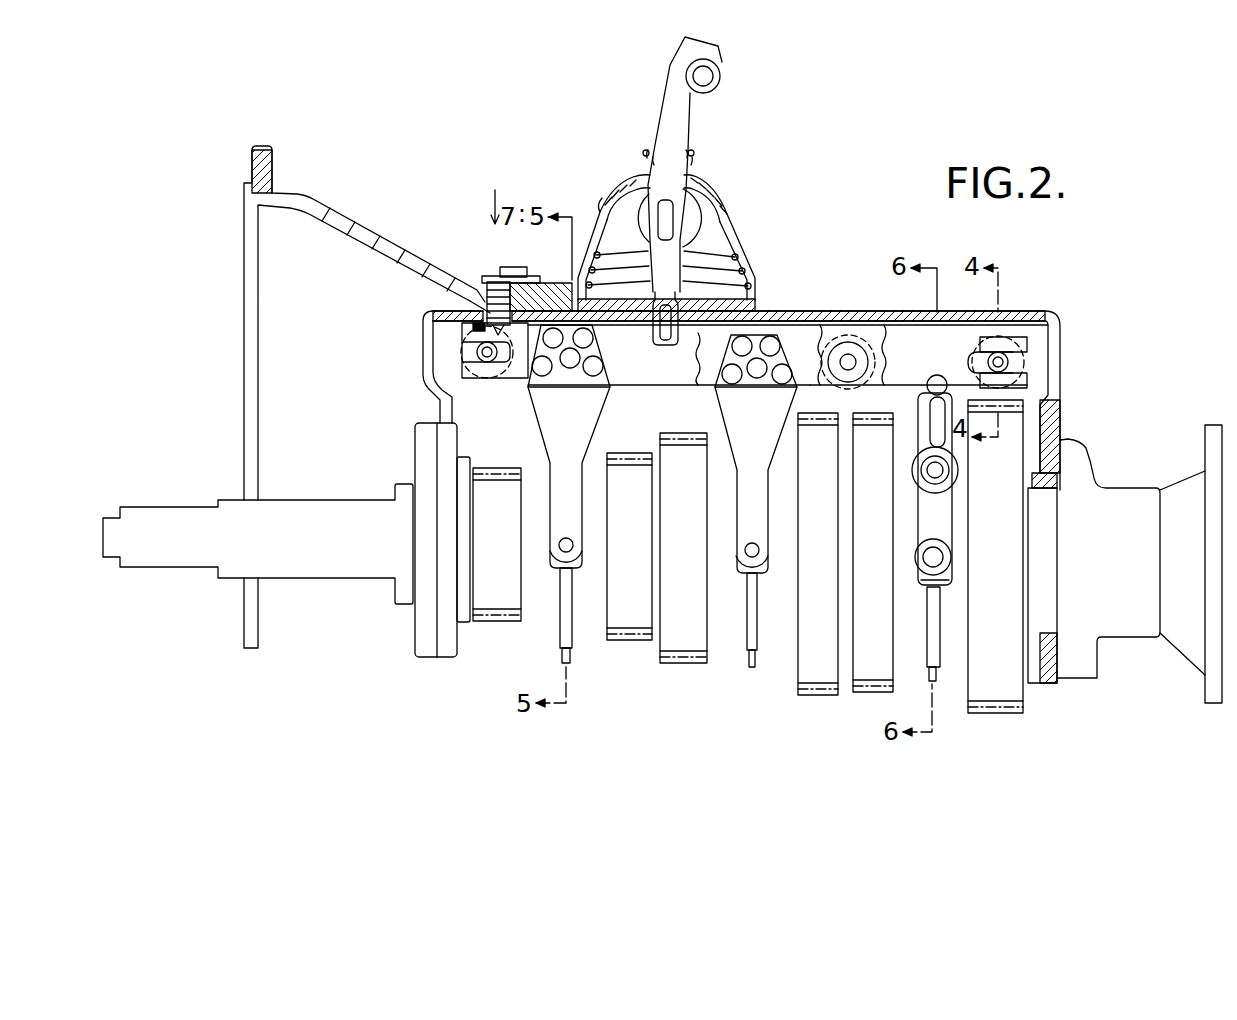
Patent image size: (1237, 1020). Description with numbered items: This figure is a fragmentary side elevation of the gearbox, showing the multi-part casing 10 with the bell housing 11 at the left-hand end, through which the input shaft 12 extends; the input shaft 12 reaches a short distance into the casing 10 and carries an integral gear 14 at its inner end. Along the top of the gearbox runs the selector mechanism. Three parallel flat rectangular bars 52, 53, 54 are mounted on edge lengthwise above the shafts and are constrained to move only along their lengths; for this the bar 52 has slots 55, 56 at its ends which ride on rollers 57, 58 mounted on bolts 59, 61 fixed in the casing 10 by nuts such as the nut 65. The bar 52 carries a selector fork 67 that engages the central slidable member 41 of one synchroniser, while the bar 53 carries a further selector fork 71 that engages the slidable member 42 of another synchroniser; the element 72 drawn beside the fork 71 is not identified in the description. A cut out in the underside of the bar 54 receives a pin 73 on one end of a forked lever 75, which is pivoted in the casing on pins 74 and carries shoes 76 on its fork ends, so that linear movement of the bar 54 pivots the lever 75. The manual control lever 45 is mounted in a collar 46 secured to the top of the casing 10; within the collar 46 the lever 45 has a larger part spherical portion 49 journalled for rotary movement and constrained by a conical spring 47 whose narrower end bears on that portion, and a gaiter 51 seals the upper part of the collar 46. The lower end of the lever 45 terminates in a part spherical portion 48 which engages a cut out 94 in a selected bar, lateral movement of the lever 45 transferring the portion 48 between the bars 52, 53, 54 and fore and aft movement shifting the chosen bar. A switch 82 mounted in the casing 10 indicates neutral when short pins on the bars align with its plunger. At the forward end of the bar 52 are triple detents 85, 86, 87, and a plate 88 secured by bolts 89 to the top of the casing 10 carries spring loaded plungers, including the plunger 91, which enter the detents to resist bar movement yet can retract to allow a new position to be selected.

The casing 10 is at (896, 322).
The bell housing 11 is at (333, 218).
The input shaft 12 is at (177, 518).
The integral gear 14 is at (502, 600).
The central slidable member 41 is at (563, 628).
The central slidable member 42 is at (748, 653).
The manual control lever 45 is at (663, 107).
The collar 46 is at (727, 251).
The conical spring 47 is at (743, 268).
The part spherical integral portion 48 is at (659, 340).
The larger part spherical portion 49 is at (683, 214).
The gaiter 51 is at (707, 193).
The bar 52 is at (517, 371).
The bar 53 is at (798, 343).
The bar 54 is at (908, 374).
The slot 55 is at (477, 345).
The slot 56 is at (1023, 362).
The roller 57 is at (480, 357).
The roller 58 is at (1017, 372).
The bolt 59 is at (477, 352).
The bolt 61 is at (1003, 362).
The nut 65 is at (570, 360).
The selector fork 67 is at (547, 403).
The selector fork 71 is at (748, 458).
The fork lever head 72 is at (732, 372).
The pin 73 is at (934, 378).
The pins 74 is at (948, 467).
The forked lever 75 is at (942, 522).
The shoes 76 is at (951, 553).
The switch 82 is at (847, 341).
The detent 85 is at (483, 313).
The detent 86 is at (497, 282).
The detent 87 is at (522, 313).
The plate 88 is at (533, 275).
The bolts 89 is at (515, 268).
The spring loaded plunger 91 is at (497, 300).
The cut out 94 is at (670, 341).